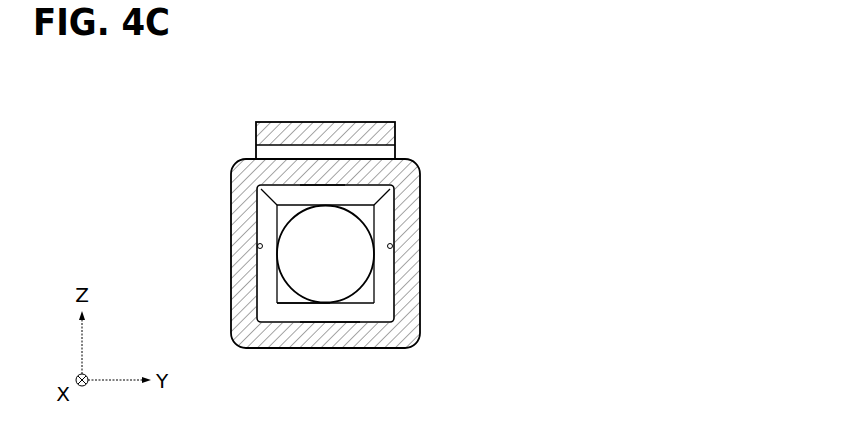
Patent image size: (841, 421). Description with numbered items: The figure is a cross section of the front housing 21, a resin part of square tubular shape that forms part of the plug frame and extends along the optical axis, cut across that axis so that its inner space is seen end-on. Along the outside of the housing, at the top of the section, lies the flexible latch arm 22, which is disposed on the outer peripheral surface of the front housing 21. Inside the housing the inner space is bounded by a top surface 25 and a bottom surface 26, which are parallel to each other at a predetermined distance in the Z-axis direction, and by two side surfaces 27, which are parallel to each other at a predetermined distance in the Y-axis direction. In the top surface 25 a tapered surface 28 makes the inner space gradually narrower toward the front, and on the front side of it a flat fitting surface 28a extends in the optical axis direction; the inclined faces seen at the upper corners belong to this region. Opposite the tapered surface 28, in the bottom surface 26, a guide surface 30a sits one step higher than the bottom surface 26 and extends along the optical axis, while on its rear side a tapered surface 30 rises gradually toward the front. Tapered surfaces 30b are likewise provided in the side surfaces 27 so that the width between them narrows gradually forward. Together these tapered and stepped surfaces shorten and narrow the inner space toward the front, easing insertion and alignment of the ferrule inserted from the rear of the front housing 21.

The front housing 21 is at (421, 310).
The flexible latch arm 22 is at (375, 122).
The top surface 25 is at (325, 185).
The bottom surface 26 is at (333, 322).
The side surfaces 27 is at (392, 246).
The tapered surface 28 is at (345, 197).
The flat fitting surface 28a is at (288, 211).
The tapered surface 30 is at (360, 313).
The guide surface 30a is at (287, 305).
The tapered surfaces 30b is at (387, 278).